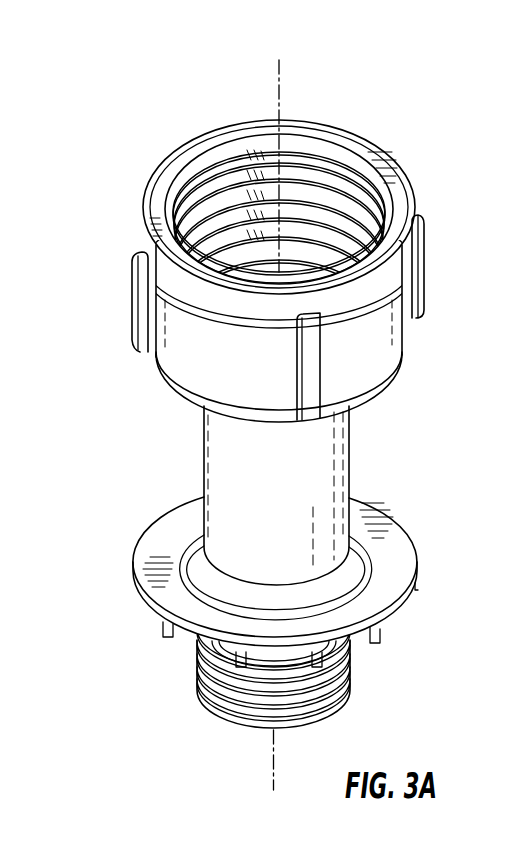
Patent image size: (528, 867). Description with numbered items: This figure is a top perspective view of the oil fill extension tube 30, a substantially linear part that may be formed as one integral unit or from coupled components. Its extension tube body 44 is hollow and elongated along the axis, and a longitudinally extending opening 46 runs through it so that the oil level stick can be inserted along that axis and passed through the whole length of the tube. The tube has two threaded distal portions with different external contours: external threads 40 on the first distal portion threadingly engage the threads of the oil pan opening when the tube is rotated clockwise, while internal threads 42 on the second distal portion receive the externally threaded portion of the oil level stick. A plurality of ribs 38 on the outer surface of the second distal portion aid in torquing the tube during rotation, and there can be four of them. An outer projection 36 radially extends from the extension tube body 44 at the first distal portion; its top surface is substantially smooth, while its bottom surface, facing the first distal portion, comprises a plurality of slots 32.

The oil fill extension tube 30 is at (90, 167).
The slots 32 is at (175, 651).
The outer projection 36 is at (160, 563).
The ribs 38 is at (415, 277).
The external threads 40 is at (331, 690).
The internal threads 42 is at (330, 197).
The extension tube body 44 is at (340, 478).
The longitudinally extending opening 46 is at (270, 229).